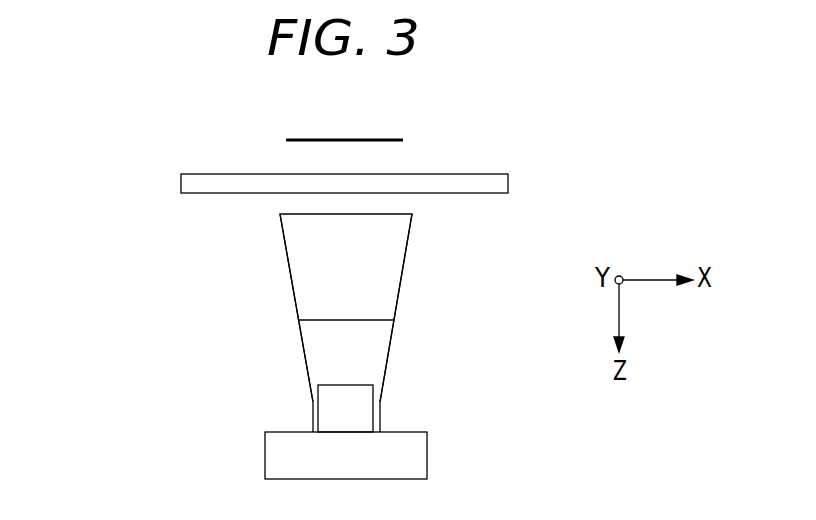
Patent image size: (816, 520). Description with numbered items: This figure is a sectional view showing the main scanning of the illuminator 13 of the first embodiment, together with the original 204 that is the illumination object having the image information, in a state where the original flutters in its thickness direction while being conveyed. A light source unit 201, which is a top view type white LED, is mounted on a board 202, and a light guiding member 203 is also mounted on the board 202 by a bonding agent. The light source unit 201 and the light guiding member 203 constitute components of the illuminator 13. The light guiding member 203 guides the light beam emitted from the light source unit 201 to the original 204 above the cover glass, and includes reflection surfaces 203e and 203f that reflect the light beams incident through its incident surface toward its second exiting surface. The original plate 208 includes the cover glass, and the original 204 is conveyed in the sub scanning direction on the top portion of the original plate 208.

The illuminator 13 is at (143, 272).
The light source unit 201 is at (335, 408).
The board 202 is at (428, 452).
The light guiding member 203 is at (313, 253).
The reflection surface 203e is at (295, 300).
The reflection surface 203f is at (400, 290).
The original 204 is at (382, 140).
The original plate 208 is at (508, 183).